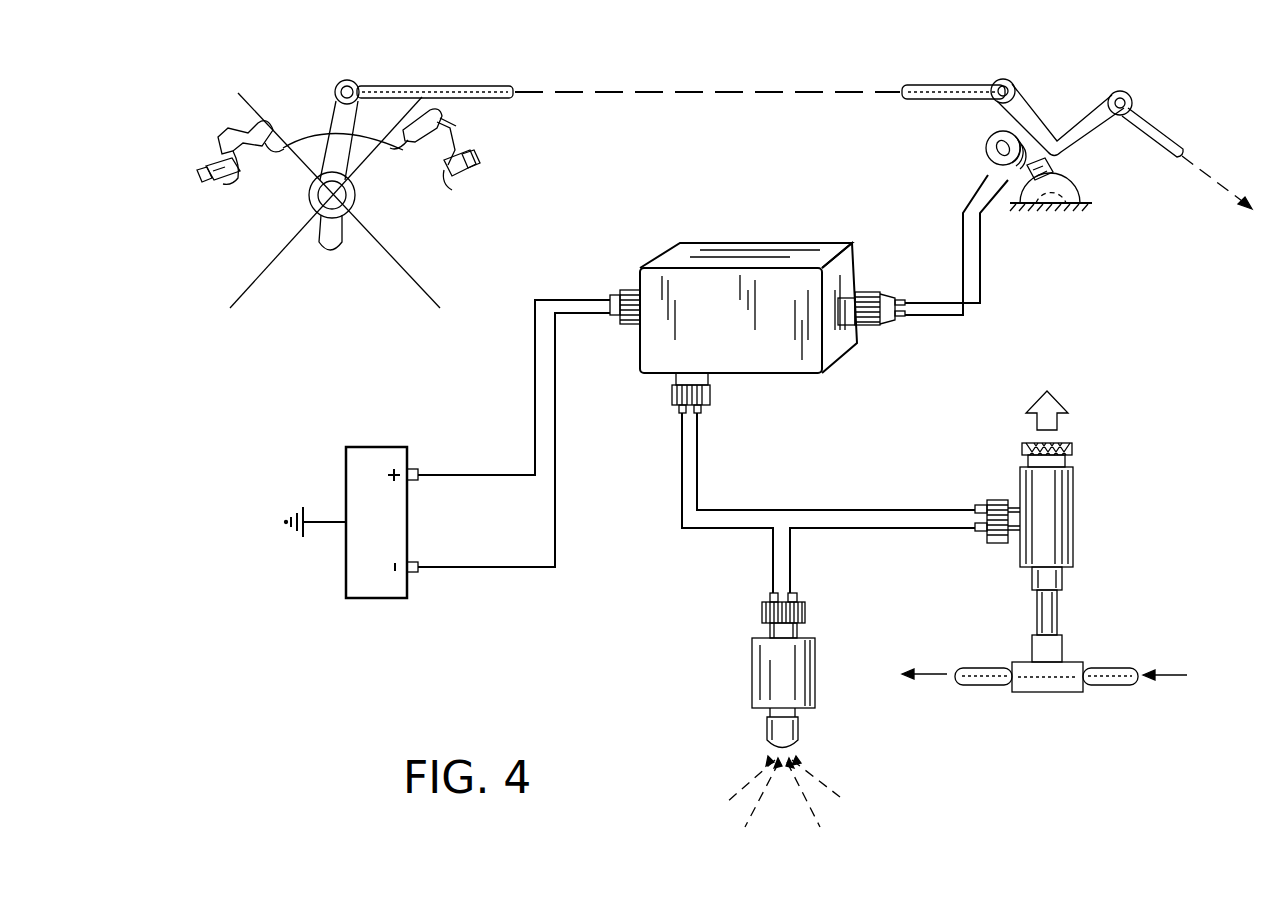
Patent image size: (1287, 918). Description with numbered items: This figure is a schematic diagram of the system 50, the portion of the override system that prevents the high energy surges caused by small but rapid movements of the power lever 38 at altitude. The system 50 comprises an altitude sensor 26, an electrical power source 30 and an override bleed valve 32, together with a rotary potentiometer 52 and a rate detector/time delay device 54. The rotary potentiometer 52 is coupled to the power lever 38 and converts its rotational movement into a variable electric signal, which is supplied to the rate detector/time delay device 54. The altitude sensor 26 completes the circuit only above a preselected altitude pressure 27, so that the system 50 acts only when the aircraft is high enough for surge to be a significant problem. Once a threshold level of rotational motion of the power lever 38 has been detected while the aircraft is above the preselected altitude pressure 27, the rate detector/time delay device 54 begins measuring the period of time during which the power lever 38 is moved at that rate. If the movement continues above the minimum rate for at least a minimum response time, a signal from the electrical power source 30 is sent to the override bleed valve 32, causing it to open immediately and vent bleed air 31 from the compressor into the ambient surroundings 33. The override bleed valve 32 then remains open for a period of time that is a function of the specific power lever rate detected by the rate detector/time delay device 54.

The altitude sensor 26 is at (753, 677).
The altitude pressure 27 is at (820, 813).
The electrical power source 30 is at (347, 575).
The bleed air 31 is at (1183, 652).
The override bleed valve 32 is at (1075, 510).
The ambient surroundings 33 is at (1060, 402).
The power lever 38 is at (340, 89).
The system 50 is at (1103, 317).
The rotary potentiometer 52 is at (1008, 185).
The rate detector/time delay device 54 is at (837, 350).